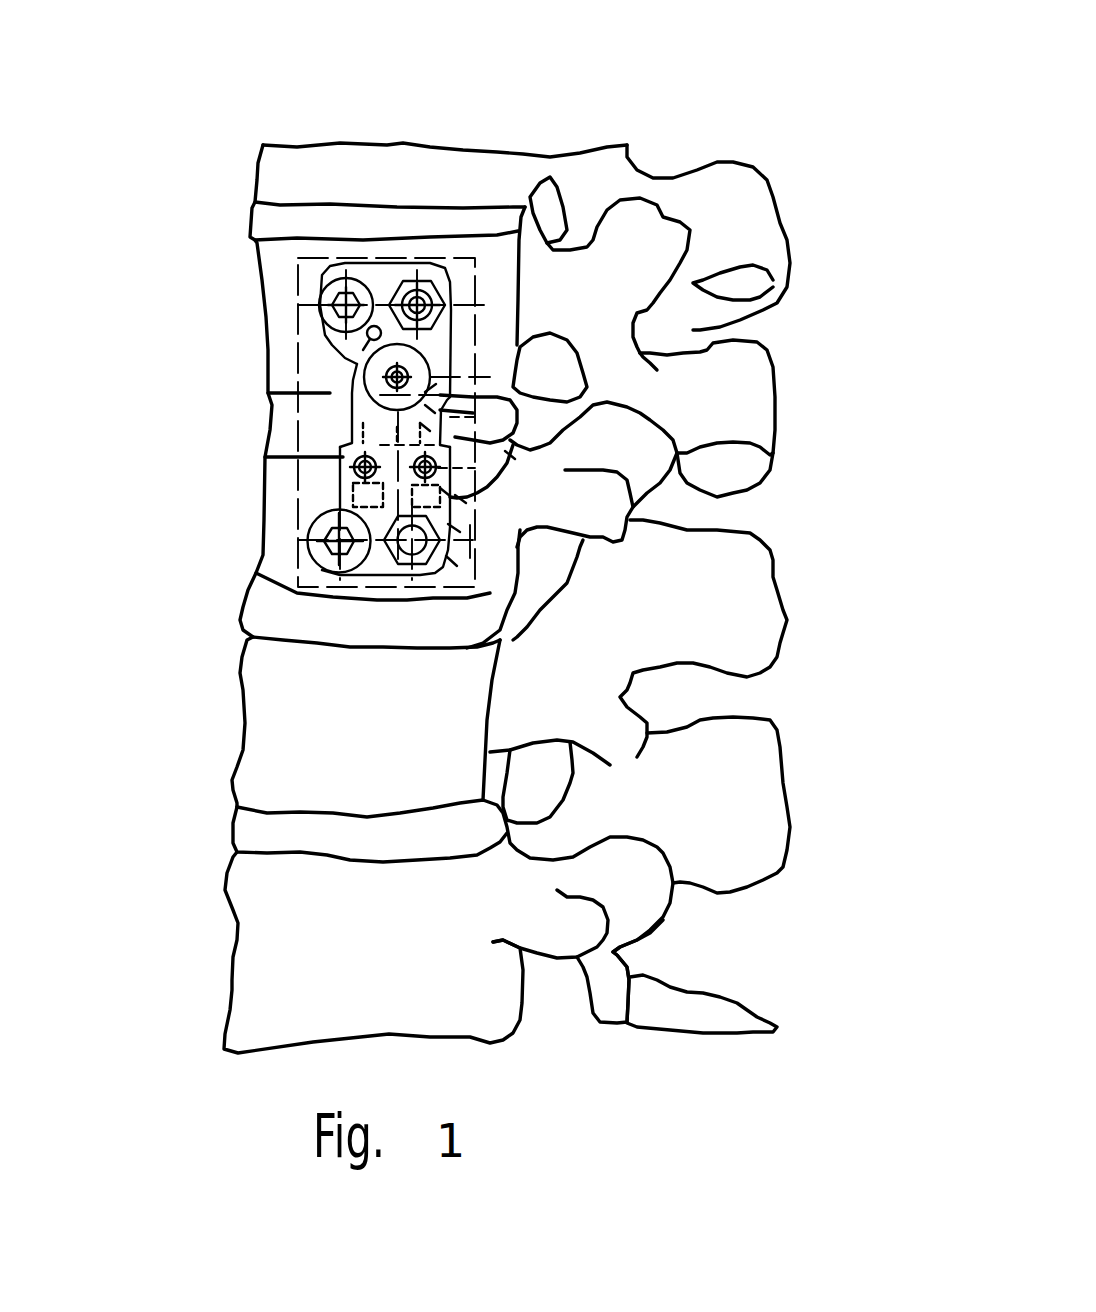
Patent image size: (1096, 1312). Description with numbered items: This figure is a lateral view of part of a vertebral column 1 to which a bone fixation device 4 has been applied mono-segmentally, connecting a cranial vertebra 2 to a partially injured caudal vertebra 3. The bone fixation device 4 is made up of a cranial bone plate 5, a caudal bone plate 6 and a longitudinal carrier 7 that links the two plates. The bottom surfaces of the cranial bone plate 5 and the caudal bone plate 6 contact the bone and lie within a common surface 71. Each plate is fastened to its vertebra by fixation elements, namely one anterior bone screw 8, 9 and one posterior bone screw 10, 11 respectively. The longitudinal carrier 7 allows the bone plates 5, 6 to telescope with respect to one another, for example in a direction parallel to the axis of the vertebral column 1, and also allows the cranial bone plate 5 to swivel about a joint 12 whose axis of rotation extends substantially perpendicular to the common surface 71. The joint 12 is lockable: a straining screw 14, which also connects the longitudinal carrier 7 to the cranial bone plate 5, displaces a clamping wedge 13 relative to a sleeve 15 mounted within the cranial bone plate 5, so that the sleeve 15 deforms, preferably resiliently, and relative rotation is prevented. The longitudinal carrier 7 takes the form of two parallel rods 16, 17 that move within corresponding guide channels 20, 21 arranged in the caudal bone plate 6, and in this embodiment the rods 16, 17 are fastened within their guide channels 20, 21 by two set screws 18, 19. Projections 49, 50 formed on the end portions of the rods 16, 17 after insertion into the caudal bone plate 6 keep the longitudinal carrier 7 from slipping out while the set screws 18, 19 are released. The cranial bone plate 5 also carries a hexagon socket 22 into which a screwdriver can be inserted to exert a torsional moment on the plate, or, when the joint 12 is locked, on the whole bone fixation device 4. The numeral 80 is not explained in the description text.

The vertebral column 1 is at (195, 733).
The cranial vertebra 2 is at (320, 250).
The caudal vertebra 3 is at (348, 435).
The bone fixation device 4 is at (341, 411).
The cranial bone plate 5 is at (340, 360).
The caudal bone plate 6 is at (330, 562).
The longitudinal carrier 7 is at (355, 465).
The anterior bone screw 8 is at (305, 288).
The anterior bone screw 9 is at (305, 572).
The posterior bone screw 10 is at (403, 288).
The posterior bone screw 11 is at (398, 575).
The joint 12 is at (364, 377).
The clamping wedge 13 is at (405, 372).
The straining screw 14 is at (418, 362).
The sleeve 15 is at (433, 378).
The parallel rod 16 is at (428, 410).
The parallel rod 17 is at (425, 427).
The set screw 18 is at (512, 455).
The set screw 19 is at (445, 492).
The guide channel 20 is at (355, 508).
The guide channel 21 is at (345, 553).
The hexagon socket 22 is at (335, 335).
The projection 49 is at (462, 499).
The projection 50 is at (455, 528).
The common surface 71 is at (452, 561).
The nut 80 is at (321, 280).